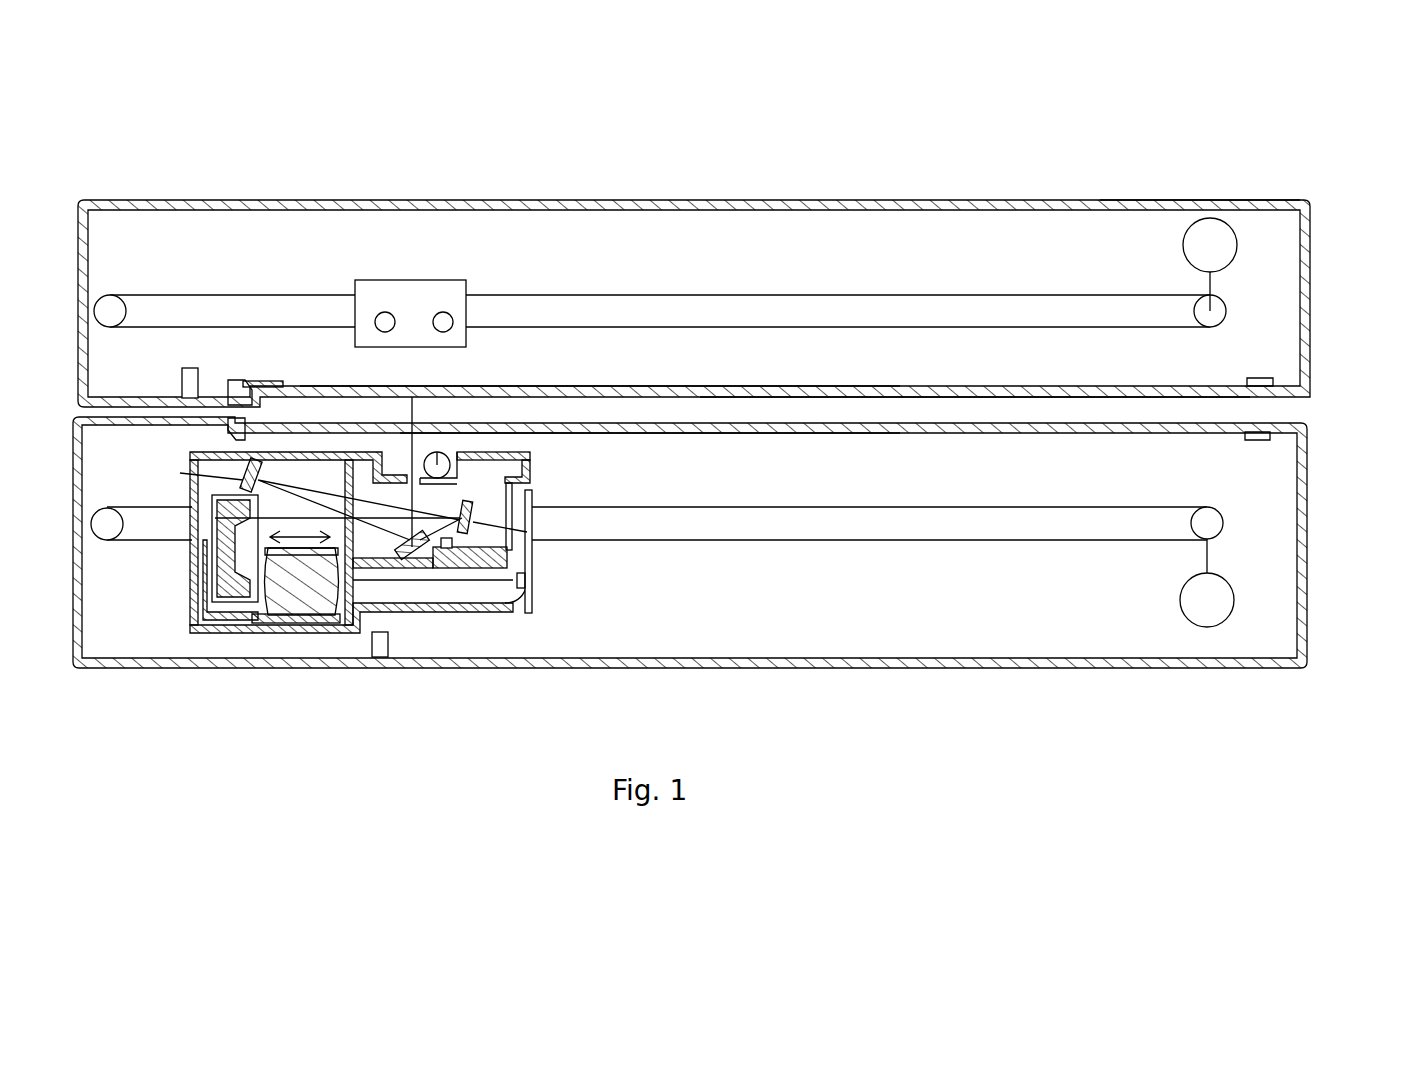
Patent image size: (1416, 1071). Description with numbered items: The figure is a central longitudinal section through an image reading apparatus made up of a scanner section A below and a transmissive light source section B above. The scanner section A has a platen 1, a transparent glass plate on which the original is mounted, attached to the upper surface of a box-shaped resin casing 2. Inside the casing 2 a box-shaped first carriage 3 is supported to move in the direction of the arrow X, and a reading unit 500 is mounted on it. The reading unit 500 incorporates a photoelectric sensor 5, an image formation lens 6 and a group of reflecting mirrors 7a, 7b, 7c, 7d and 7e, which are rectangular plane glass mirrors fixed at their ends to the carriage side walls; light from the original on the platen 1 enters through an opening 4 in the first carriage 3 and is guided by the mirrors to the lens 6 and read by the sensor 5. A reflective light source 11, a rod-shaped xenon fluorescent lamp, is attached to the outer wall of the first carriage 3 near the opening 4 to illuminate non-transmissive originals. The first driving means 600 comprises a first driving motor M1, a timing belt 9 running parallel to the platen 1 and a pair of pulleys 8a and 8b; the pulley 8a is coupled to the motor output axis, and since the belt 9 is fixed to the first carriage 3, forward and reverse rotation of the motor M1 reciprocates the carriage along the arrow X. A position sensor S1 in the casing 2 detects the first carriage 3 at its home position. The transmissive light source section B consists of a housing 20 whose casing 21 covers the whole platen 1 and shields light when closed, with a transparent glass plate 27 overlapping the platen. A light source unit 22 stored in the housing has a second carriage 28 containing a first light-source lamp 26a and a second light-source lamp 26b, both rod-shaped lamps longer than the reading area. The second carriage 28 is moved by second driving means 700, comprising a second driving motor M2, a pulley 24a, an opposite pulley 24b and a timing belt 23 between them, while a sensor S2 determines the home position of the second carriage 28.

The platen 1 is at (846, 410).
The casing 2 is at (876, 663).
The first carriage 3 is at (650, 459).
The opening 4 is at (411, 470).
The photoelectric sensor 5 is at (475, 598).
The image formation lens 6 is at (307, 605).
The reflecting mirror 7a is at (425, 557).
The reflecting mirror 7b is at (250, 478).
The reflecting mirror 7c is at (512, 524).
The reflecting mirror 7d is at (235, 505).
The reflecting mirror 7e is at (205, 590).
The pulley 8a is at (1212, 518).
The pulley 8b is at (112, 535).
The timing belt 9 is at (848, 546).
The reflective light source 11 is at (270, 381).
The housing 20 is at (958, 232).
The casing 21 is at (1255, 200).
The light source unit 22 is at (413, 306).
The timing belt 23 is at (810, 295).
The pulley 24a is at (1218, 313).
The pulley 24b is at (112, 308).
The first light-source lamp 26a is at (385, 324).
The second light-source lamp 26b is at (443, 324).
The transparent glass plate 27 is at (992, 386).
The second carriage 28 is at (408, 280).
The reading unit 500 is at (243, 637).
The first driving means 600 is at (1030, 590).
The second driving means 700 is at (1080, 245).
The position sensor S1 is at (392, 648).
The sensor S2 is at (190, 368).
The first driving motor M1 is at (1207, 583).
The second driving motor M2 is at (1210, 264).
The scanner section A is at (1307, 573).
The transmissive light source section B is at (1332, 295).
The arrow X is at (655, 570).